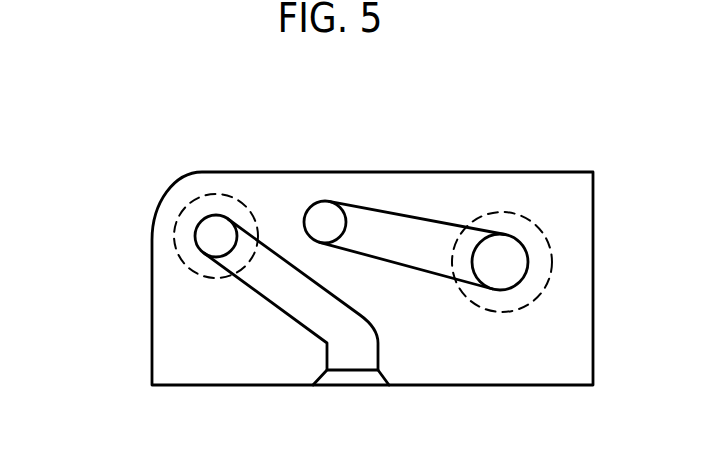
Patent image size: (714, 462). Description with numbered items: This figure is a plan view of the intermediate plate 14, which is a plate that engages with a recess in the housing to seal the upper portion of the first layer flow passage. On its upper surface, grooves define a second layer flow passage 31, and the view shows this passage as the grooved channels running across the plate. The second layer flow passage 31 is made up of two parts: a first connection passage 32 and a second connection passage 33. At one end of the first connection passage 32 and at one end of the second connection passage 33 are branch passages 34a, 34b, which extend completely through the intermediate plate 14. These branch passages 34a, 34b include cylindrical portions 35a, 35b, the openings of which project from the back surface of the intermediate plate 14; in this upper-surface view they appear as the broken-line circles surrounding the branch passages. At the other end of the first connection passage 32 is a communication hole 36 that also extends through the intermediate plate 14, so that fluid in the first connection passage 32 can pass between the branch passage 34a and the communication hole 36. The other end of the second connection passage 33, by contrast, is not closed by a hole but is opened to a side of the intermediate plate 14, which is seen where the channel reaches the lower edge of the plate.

The intermediate plate 14 is at (117, 137).
The second layer flow passage 31 is at (280, 243).
The first connection passage 32 is at (422, 218).
The second connection passage 33 is at (306, 328).
The branch passage 34a is at (520, 237).
The branch passage 34b is at (216, 214).
The cylindrical portion 35a is at (547, 240).
The cylindrical portion 35b is at (182, 206).
The communication hole 36 is at (328, 201).